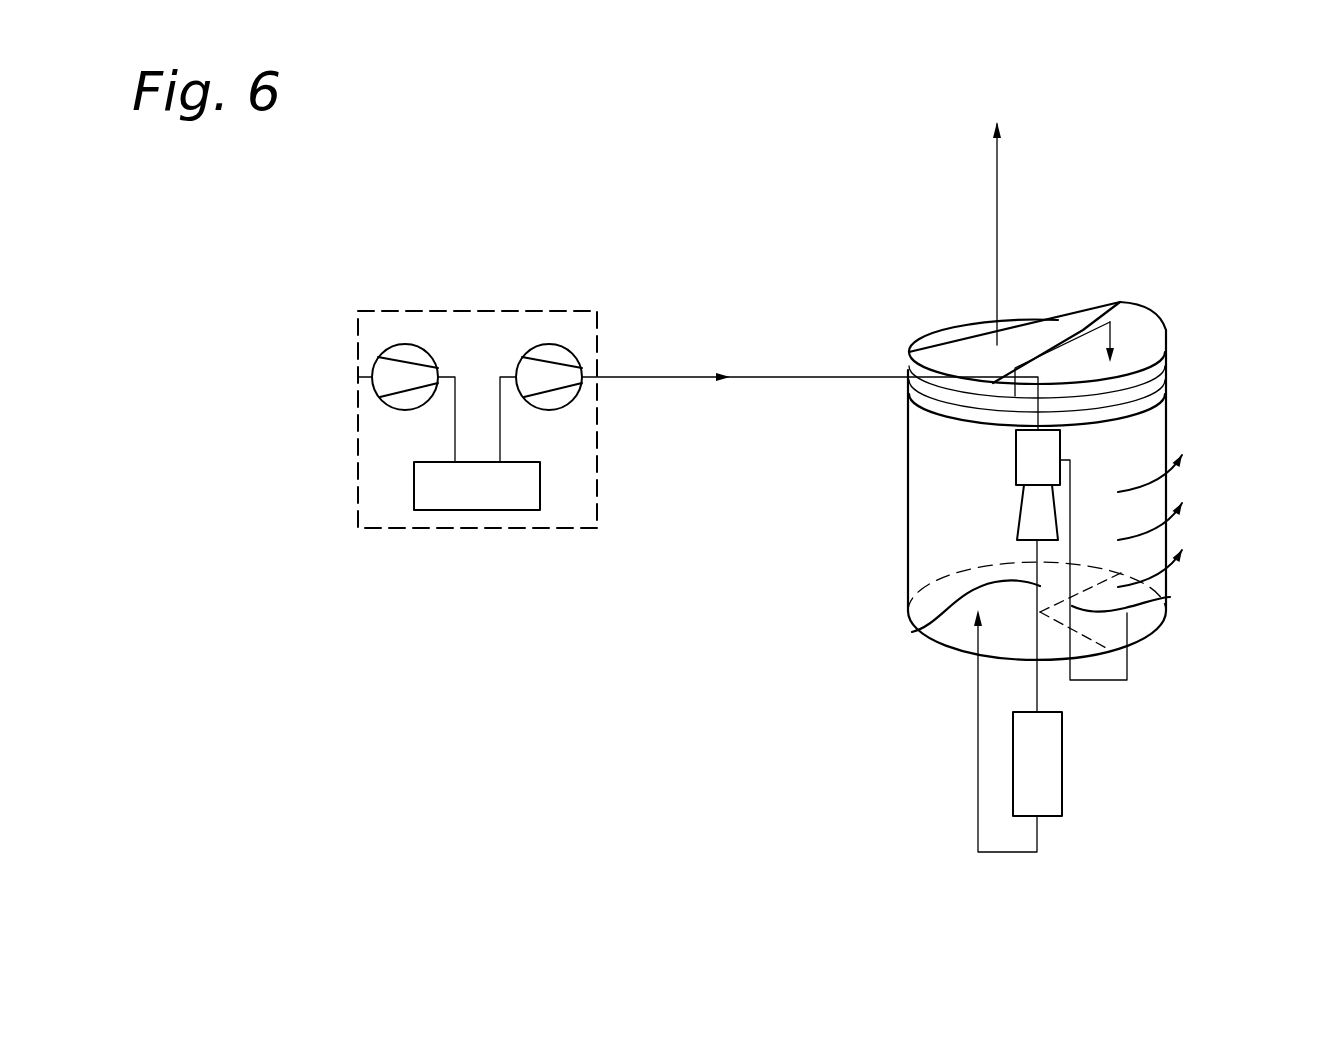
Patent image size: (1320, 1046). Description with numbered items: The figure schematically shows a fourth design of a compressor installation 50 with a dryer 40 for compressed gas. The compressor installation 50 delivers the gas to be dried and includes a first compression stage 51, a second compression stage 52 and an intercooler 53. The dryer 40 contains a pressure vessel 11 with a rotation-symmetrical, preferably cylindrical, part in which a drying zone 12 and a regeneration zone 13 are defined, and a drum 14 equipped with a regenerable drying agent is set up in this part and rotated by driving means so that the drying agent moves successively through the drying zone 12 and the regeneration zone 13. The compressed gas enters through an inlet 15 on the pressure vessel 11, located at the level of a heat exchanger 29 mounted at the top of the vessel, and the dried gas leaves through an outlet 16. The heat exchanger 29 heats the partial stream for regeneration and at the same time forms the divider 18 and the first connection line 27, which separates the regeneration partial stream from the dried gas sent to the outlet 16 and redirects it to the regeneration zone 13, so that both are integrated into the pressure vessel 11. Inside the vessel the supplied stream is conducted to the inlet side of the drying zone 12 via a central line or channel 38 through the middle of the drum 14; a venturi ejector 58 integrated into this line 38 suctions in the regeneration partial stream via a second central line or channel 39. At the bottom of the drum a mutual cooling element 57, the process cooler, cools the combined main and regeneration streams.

The pressure vessel 11 is at (1178, 674).
The drying zone 12 is at (940, 557).
The regeneration zone 13 is at (1150, 445).
The drum 14 is at (1168, 407).
The inlet 15 is at (831, 377).
The outlet 16 is at (997, 168).
The divider 18 is at (955, 352).
The first connection line 27 is at (1087, 325).
The heat exchanger 29 is at (1145, 330).
The central line or channel 38 is at (925, 625).
The second central line or channel 39 is at (1166, 597).
The dryer 40 is at (718, 195).
The compressor installation 50 is at (455, 326).
The first compression stage 51 is at (382, 373).
The second compression stage 52 is at (548, 348).
The intercooler 53 is at (437, 508).
The mutual cooling element 57 is at (1057, 797).
The venturi ejector 58 is at (1030, 463).